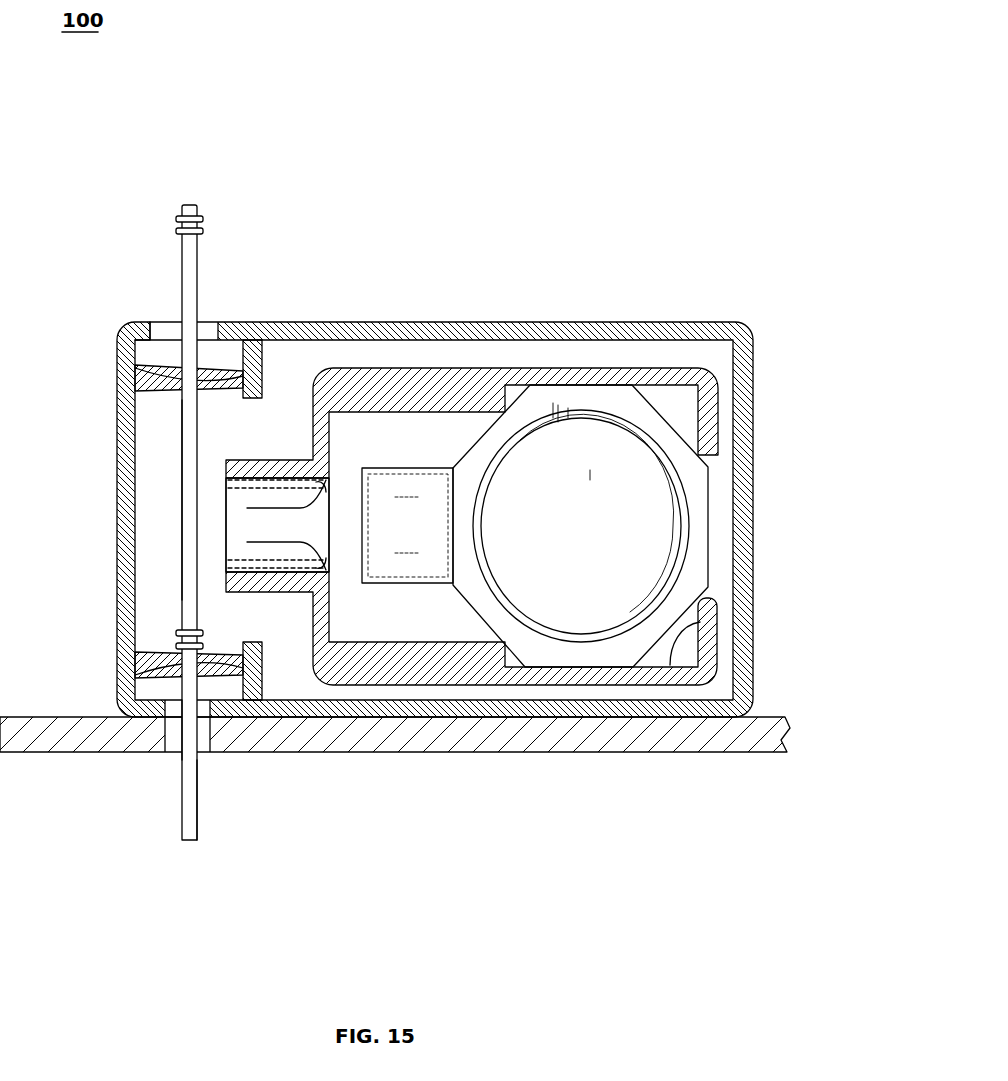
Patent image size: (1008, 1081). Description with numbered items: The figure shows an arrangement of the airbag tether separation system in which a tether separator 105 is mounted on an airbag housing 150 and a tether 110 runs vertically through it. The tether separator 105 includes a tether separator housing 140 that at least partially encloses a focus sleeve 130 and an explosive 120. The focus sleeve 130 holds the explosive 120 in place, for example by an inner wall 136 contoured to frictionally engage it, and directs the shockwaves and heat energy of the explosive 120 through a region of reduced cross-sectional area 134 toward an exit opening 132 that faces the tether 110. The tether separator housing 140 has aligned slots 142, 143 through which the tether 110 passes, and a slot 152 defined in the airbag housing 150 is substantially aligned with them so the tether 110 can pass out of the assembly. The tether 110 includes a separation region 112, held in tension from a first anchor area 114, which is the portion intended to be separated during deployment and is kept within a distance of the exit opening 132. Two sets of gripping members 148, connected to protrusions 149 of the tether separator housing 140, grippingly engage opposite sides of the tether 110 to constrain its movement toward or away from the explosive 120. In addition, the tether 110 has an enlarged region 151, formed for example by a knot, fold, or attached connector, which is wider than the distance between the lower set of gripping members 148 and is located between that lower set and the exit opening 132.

The tether separator 105 is at (587, 294).
The tether 110 is at (182, 280).
The separation region 112 is at (174, 513).
The first anchor area 114 is at (174, 206).
The explosive 120 is at (658, 410).
The focus sleeve 130 is at (425, 367).
The exit opening 132 is at (222, 548).
The region of reduced cross-sectional area 134 is at (296, 460).
The inner wall 136 is at (700, 622).
The tether separator housing 140 is at (753, 635).
The slot 142 is at (162, 312).
The slot 143 is at (205, 724).
The gripping members 148 is at (237, 368).
The protrusions 149 is at (262, 357).
The airbag housing 150 is at (720, 752).
The enlarged region 151 is at (164, 618).
The slot 152 is at (208, 786).